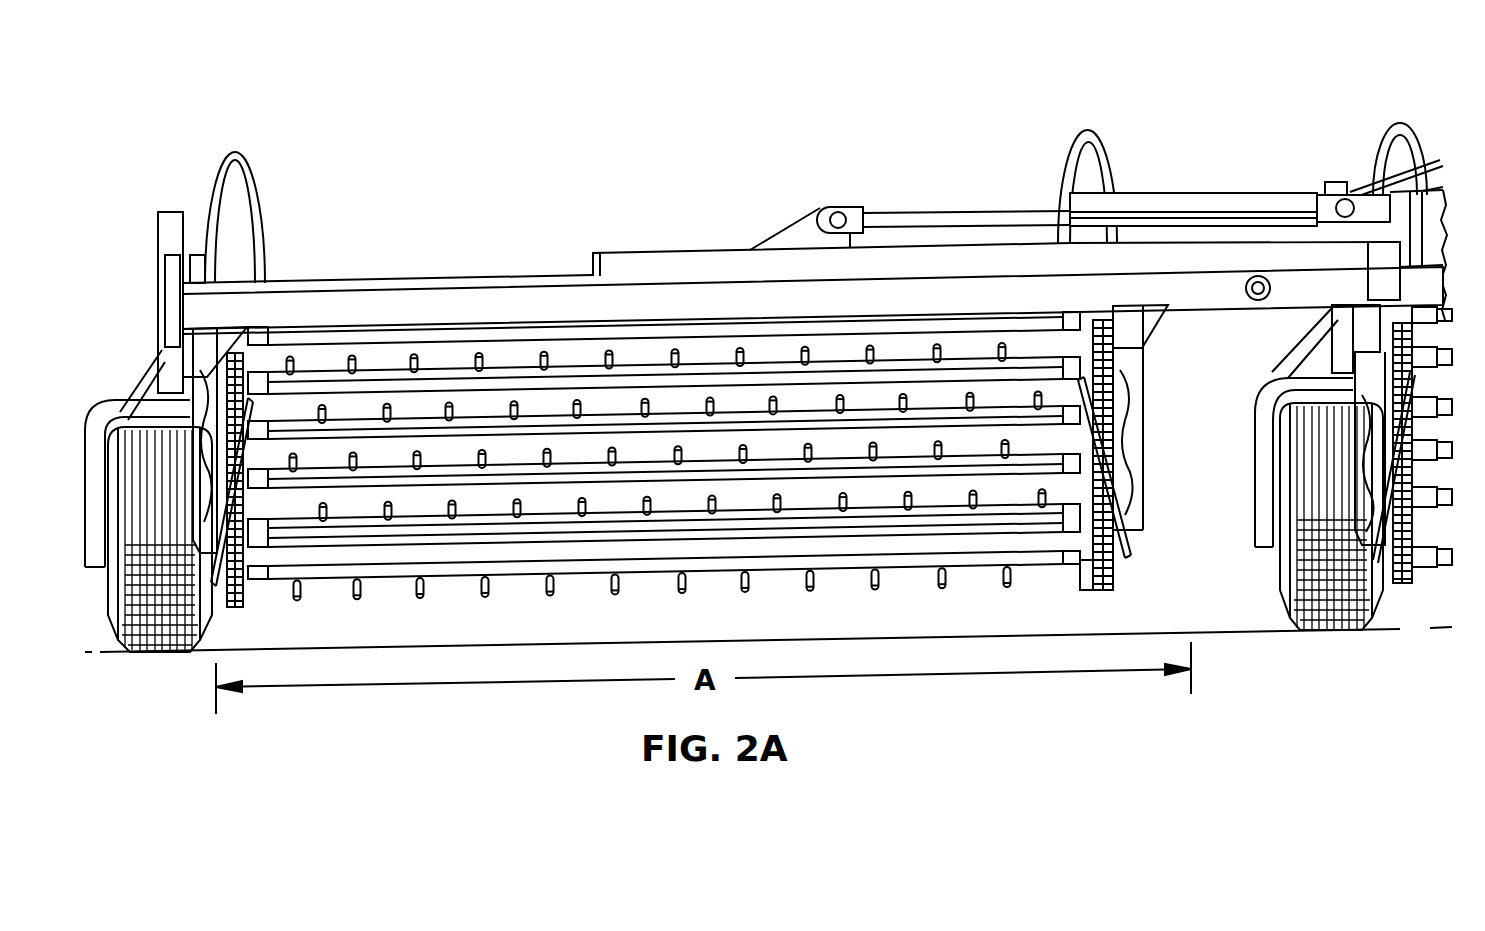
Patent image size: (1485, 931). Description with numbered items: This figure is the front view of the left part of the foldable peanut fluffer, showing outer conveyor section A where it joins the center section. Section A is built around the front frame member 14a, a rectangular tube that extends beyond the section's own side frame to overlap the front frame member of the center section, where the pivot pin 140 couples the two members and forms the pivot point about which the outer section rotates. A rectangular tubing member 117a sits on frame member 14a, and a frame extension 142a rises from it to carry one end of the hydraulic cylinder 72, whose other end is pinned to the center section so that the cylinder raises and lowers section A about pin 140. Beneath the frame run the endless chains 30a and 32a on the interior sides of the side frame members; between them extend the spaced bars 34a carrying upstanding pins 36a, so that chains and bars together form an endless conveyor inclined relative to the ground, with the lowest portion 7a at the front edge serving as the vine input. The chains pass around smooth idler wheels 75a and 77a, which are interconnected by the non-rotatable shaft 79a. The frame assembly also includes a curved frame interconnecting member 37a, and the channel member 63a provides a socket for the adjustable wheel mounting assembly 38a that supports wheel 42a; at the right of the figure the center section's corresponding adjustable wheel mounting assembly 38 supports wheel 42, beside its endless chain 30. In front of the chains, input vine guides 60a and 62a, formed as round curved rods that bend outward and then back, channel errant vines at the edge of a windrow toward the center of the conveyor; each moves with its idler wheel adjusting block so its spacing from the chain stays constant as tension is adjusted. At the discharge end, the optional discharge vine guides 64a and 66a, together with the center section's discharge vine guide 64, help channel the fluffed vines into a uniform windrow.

The lowest portion of the endless conveyor 7a is at (848, 586).
The front frame member 14a is at (390, 295).
The endless chain 30 is at (1405, 583).
The endless chain 30a is at (248, 602).
The endless chain 32a is at (1093, 592).
The spaced bar 34a is at (582, 580).
The upstanding pin 36a is at (749, 596).
The curved frame interconnecting member 37a is at (1143, 393).
The adjustable wheel mounting assembly 38 is at (1257, 473).
The adjustable wheel mounting assembly 38a is at (107, 410).
The wheel 42 is at (1283, 587).
The wheel 42a is at (163, 653).
The vine guide 60a is at (225, 450).
The vine guide 62a is at (1110, 433).
The channel member 63a is at (168, 268).
The discharge vine guide 64 is at (1402, 123).
The discharge vine guide 64a is at (233, 152).
The discharge vine guide 66a is at (1090, 133).
The hydraulic cylinder 72 is at (1230, 200).
The idler wheel 75a is at (277, 577).
The idler wheel 77a is at (1117, 567).
The non-rotatable shaft 79a is at (460, 543).
The rectangular tubing member 117a is at (700, 262).
The pivot pin 140 is at (1253, 303).
The frame extension 142a is at (807, 232).